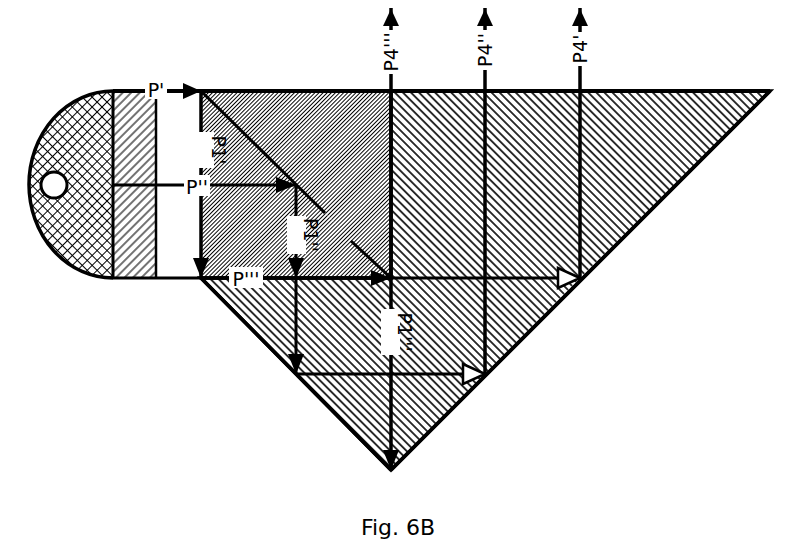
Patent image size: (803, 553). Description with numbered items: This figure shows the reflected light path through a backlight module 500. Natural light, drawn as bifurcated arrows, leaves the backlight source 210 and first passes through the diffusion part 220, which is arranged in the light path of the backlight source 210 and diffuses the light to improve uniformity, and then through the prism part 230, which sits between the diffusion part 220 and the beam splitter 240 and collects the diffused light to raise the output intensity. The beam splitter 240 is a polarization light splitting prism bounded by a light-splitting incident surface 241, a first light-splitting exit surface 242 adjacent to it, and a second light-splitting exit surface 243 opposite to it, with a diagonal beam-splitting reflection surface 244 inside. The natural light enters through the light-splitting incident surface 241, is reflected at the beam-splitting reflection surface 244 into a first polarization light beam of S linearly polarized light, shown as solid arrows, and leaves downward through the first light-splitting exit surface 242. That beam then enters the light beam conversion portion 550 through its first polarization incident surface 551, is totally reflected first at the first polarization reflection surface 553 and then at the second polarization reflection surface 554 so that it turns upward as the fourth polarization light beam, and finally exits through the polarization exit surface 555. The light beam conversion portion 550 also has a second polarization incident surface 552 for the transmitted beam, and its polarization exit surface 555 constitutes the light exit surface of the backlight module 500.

The backlight module 500 is at (149, 51).
The backlight source 210 is at (71, 184).
The diffusion part 220 is at (134, 184).
The prism part 230 is at (178, 184).
The beam splitter 240 is at (296, 184).
The light-splitting incident surface 241 is at (296, 184).
The first light-splitting exit surface 242 is at (296, 265).
The second light-splitting exit surface 243 is at (296, 184).
The beam-splitting reflection surface 244 is at (296, 184).
The light beam conversion portion 550 is at (485, 280).
The first polarization incident surface 551 is at (296, 326).
The second polarization incident surface 552 is at (485, 184).
The first polarization reflection surface 553 is at (390, 422).
The second polarization reflection surface 554 is at (485, 326).
The polarization exit surface 555 is at (649, 184).